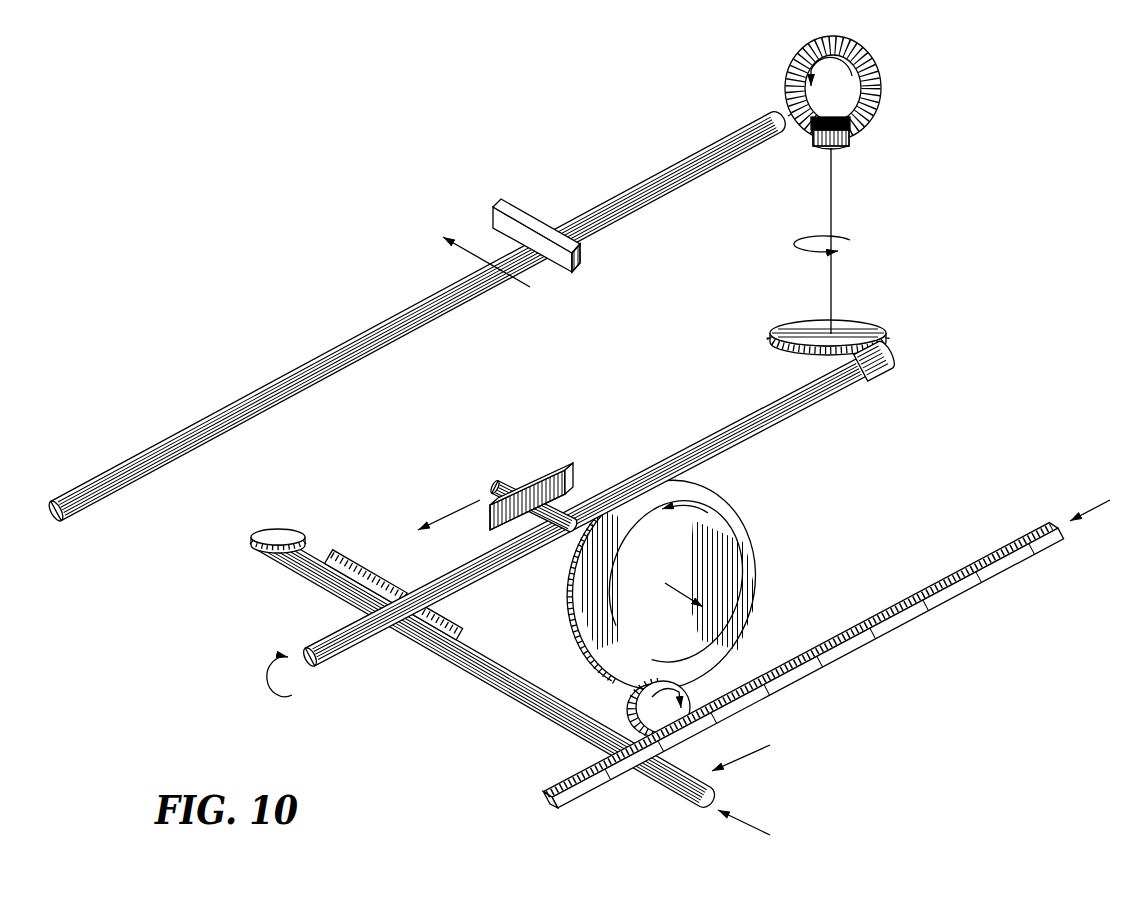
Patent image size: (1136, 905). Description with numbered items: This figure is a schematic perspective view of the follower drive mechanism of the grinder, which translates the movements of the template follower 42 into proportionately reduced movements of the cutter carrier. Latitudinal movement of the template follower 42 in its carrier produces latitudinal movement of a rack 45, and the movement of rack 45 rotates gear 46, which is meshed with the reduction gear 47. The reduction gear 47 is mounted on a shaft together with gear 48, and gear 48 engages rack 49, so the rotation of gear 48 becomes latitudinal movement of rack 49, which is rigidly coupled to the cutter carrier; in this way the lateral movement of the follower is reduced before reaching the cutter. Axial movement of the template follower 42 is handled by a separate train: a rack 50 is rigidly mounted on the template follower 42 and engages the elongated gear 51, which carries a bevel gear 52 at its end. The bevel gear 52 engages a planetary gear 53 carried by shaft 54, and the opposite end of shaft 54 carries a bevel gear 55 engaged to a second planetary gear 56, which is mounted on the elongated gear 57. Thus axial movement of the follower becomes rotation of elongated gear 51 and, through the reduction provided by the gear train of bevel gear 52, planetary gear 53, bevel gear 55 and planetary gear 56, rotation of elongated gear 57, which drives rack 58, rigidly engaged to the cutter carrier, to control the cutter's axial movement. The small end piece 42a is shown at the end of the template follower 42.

The template follower 42 is at (496, 682).
The rack end disc 42a is at (303, 538).
The rack 45 is at (938, 604).
The gear 46 is at (688, 695).
The reduction gear 47 is at (655, 571).
The gear 48 is at (518, 490).
The rack 49 is at (566, 472).
The rack 50 is at (463, 632).
The elongated gear 51 is at (328, 664).
The bevel gear 52 is at (893, 365).
The planetary gear 53 is at (856, 332).
The shaft 54 is at (828, 222).
The bevel gear 55 is at (848, 147).
The second planetary gear 56 is at (881, 110).
The elongated gear 57 is at (690, 182).
The rack 58 is at (532, 240).